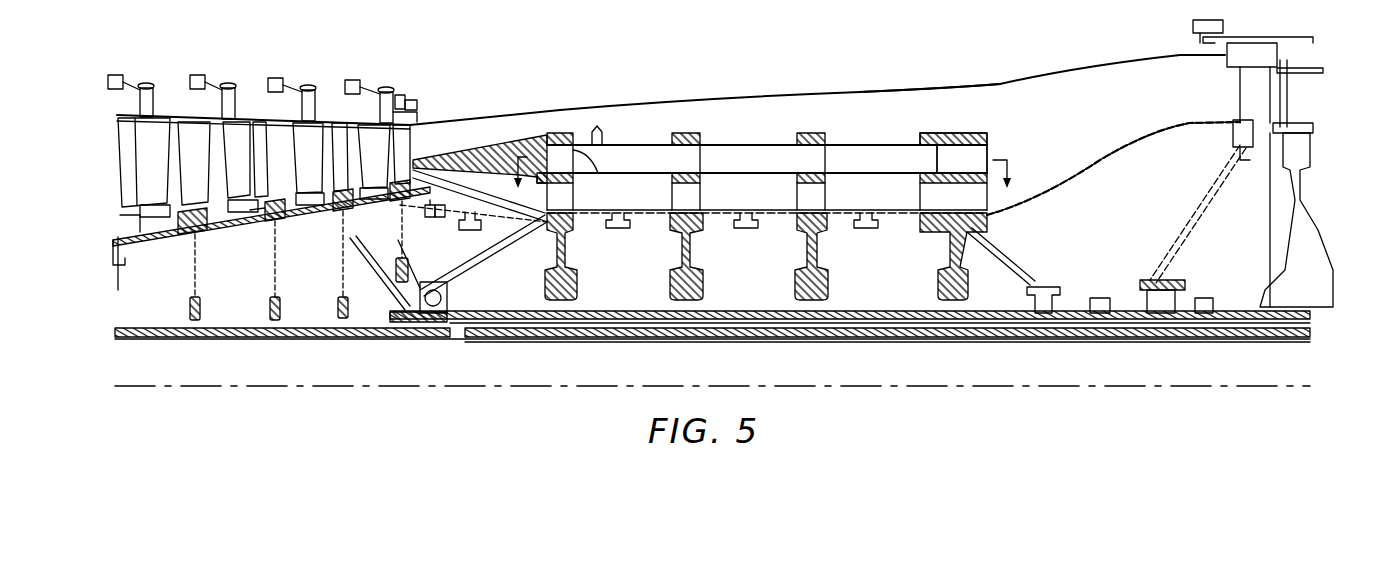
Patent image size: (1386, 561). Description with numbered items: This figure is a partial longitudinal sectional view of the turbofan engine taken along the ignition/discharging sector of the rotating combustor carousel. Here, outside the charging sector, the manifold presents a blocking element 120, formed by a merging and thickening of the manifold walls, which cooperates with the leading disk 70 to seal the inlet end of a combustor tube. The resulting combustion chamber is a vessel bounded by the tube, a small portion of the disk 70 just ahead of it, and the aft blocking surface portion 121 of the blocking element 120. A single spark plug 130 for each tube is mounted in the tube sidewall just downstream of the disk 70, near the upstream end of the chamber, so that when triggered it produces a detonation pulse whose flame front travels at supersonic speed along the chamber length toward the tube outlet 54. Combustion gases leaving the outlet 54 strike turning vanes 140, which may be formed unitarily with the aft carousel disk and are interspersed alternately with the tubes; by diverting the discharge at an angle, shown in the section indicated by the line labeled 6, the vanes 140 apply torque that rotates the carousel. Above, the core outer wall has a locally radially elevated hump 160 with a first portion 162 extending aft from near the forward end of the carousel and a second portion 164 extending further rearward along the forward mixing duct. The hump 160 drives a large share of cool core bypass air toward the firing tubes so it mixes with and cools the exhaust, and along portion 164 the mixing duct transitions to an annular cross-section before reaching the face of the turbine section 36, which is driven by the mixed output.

The turbine section 36 is at (1140, 126).
The tube outlet 54 is at (952, 138).
The leading disk 70 is at (562, 120).
The blocking element 120 is at (492, 138).
The aft blocking surface portion 121 is at (573, 170).
The spark plug 130 is at (598, 125).
The turning vane 140 is at (980, 150).
The hump 160 is at (924, 74).
The first portion of the hump 162 is at (865, 92).
The second portion of the hump 164 is at (1025, 85).
The section line 6- 6 is at (770, 182).